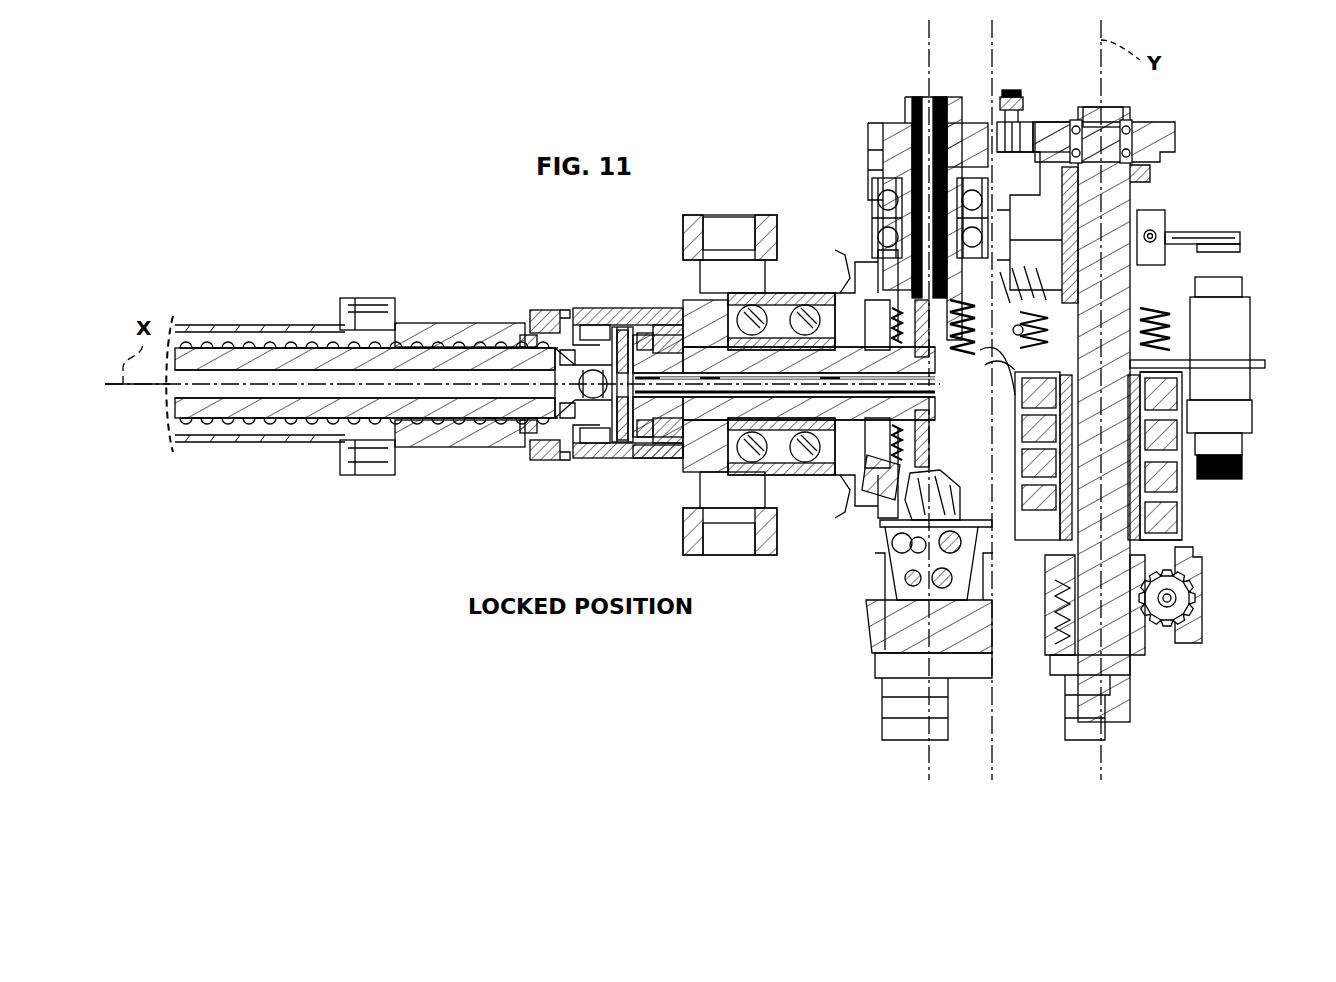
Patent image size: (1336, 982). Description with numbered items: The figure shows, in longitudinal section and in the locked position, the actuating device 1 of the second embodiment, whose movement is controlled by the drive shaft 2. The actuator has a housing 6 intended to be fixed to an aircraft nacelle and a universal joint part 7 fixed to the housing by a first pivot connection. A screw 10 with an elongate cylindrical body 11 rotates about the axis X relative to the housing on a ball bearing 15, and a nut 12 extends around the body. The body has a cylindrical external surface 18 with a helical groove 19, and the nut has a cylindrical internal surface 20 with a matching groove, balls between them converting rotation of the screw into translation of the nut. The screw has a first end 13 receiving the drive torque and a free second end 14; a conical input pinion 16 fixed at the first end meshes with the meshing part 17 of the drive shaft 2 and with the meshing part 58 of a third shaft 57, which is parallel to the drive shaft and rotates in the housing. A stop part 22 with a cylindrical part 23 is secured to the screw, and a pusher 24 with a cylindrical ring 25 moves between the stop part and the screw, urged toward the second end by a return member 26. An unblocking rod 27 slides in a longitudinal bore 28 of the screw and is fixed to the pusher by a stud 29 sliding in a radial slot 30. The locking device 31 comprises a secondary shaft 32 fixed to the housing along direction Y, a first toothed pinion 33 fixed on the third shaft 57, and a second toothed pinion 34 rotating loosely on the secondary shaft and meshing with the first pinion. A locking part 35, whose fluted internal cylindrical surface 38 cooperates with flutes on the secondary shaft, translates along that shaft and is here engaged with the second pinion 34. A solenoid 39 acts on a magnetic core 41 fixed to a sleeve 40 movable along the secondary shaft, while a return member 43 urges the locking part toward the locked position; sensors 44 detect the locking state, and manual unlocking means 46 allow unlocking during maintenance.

The actuating device 1 is at (372, 208).
The drive shaft 2 is at (880, 625).
The housing 6 is at (826, 513).
The universal joint part 7 is at (688, 535).
The screw 10 is at (262, 425).
The body 11 is at (297, 425).
The nut 12 is at (462, 449).
The first end 13 is at (905, 408).
The second end 14 is at (178, 410).
The ball bearing 15 is at (788, 300).
The conical input pinion 16 is at (898, 278).
The meshing part 17 is at (940, 485).
The cylindrical external surface 18 is at (258, 343).
The helical groove 19 is at (283, 348).
The cylindrical internal surface 20 is at (415, 422).
The stop part 22 is at (595, 318).
The cylindrical part 23 is at (602, 460).
The pusher 24 is at (592, 458).
The cylindrical ring 25 is at (553, 455).
The return member 26 is at (655, 325).
The unblocking rod 27 is at (642, 456).
The longitudinal bore 28 is at (713, 405).
The stud 29 is at (622, 340).
The radial slot 30 is at (578, 340).
The locking device 31 is at (1165, 478).
The secondary shaft 32 is at (1115, 200).
The first toothed pinion 33 is at (888, 138).
The second toothed pinion 34 is at (1160, 140).
The locking part 35 is at (1145, 172).
The internal cylindrical surface 38 is at (1125, 222).
The solenoid 39 is at (1190, 487).
The sleeve 40 is at (1135, 522).
The magnetic core 41 is at (1145, 505).
The return member 43 is at (1232, 250).
The sensor 44 is at (1235, 334).
The manual unlocking means 46 is at (1167, 600).
The third shaft 57 is at (922, 100).
The meshing part 58 is at (897, 273).